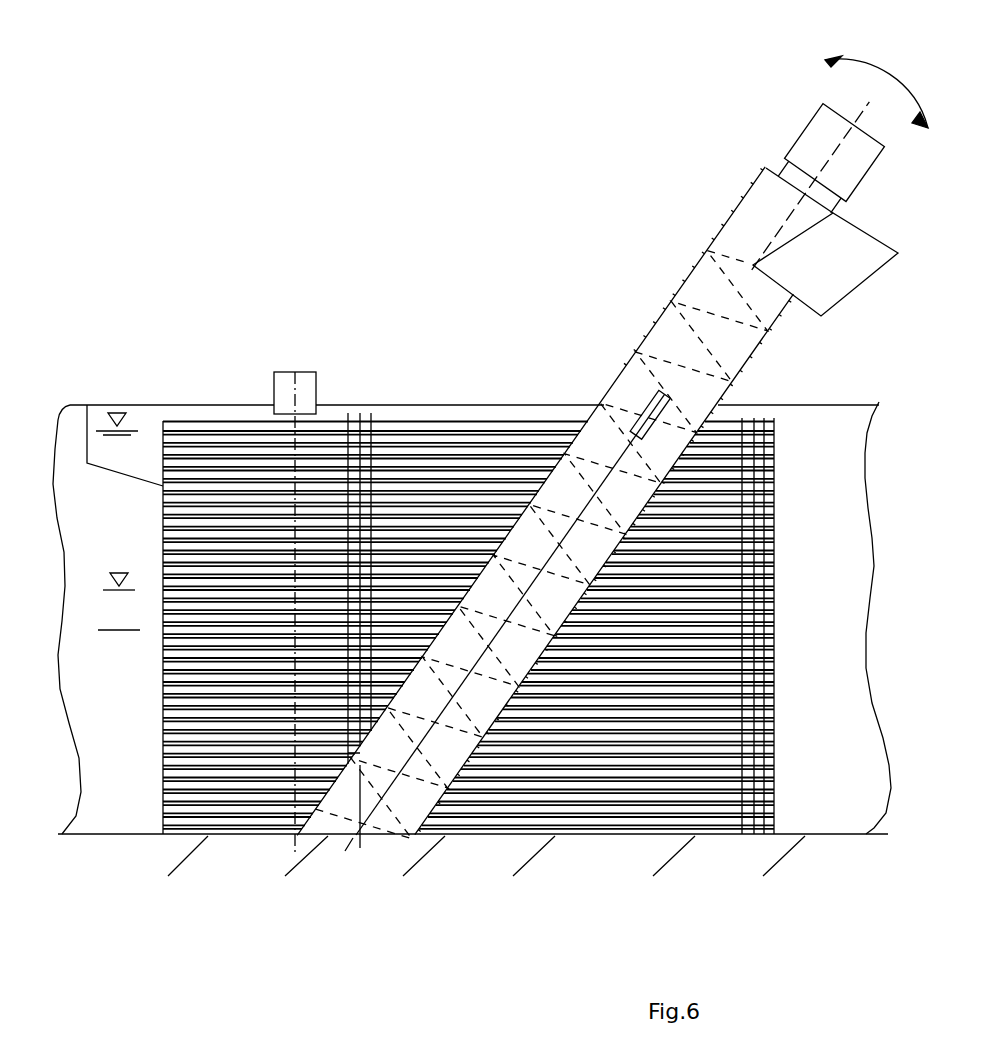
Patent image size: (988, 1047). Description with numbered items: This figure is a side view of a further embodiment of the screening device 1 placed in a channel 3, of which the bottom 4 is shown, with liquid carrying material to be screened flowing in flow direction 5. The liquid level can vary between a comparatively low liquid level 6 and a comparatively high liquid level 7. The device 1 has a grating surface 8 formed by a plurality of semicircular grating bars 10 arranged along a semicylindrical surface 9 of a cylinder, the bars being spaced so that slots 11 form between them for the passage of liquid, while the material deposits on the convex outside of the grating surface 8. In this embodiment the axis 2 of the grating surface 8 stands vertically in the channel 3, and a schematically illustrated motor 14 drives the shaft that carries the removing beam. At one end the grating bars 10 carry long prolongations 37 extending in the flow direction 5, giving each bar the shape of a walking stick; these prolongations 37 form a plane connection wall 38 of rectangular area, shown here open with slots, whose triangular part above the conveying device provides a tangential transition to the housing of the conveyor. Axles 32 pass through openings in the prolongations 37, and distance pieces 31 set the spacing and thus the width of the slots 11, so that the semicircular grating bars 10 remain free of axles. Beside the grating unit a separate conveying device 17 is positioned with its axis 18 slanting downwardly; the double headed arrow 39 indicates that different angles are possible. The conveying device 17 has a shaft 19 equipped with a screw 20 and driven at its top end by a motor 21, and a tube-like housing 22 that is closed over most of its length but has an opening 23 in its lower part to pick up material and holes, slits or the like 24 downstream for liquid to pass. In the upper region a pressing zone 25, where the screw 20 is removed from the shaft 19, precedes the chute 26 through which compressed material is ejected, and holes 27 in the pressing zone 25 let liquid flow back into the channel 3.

The device 1 is at (431, 175).
The axis 2 is at (285, 360).
The channel 3 is at (750, 840).
The bottom 4 is at (788, 800).
The flow direction 5 is at (108, 622).
The low liquid level 6 is at (158, 798).
The high liquid level 7 is at (108, 405).
The grating surface 8 is at (220, 466).
The surface of a cylinder 9 is at (79, 397).
The grating bars 10 is at (322, 418).
The slots 11 is at (332, 432).
The motor 14 is at (293, 372).
The conveying device 17 is at (620, 327).
The axis 18 is at (700, 333).
The shaft 19 is at (638, 395).
The screw 20 is at (576, 420).
The motor 21 is at (804, 142).
The tube-like housing 22 is at (707, 273).
The opening 23 is at (520, 522).
The holes, slits or the like 24 is at (481, 720).
The pressing zone 25 is at (740, 228).
The chute 26 is at (841, 235).
The holes 27 is at (773, 303).
The distance pieces 31 is at (345, 736).
The axles 32 is at (350, 463).
The prolongations 37 is at (587, 797).
The connection wall 38 is at (425, 475).
The double headed arrow 39 is at (883, 76).